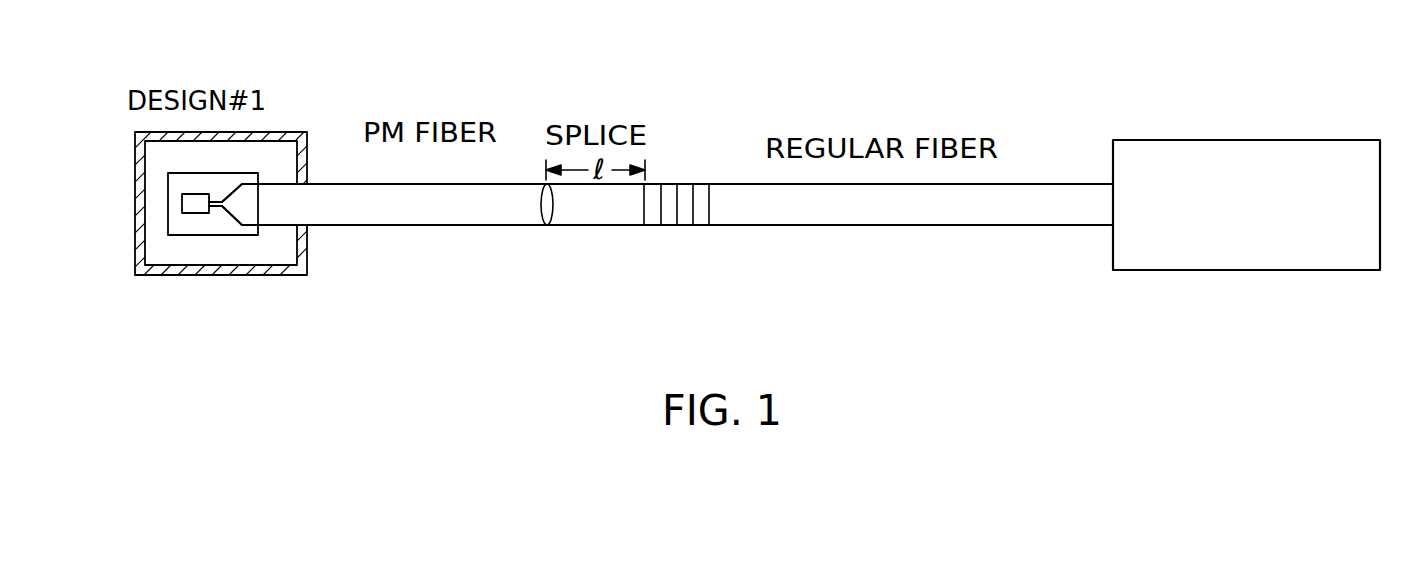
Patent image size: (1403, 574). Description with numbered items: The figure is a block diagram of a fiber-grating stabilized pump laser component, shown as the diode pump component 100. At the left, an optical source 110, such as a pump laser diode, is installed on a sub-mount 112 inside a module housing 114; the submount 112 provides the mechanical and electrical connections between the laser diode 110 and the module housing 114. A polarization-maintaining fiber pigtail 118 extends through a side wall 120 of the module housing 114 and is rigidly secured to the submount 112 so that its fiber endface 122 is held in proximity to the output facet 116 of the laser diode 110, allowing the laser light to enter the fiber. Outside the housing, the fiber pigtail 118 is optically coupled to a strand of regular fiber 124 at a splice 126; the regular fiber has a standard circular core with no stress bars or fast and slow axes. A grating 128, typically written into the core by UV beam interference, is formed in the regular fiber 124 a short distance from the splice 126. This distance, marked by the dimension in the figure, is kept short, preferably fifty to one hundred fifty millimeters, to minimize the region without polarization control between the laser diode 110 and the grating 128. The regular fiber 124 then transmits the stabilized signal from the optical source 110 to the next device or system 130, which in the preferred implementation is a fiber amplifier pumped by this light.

The diode pump component 100 is at (887, 63).
The optical source 110 is at (200, 194).
The sub-mount 112 is at (168, 203).
The module housing 114 is at (307, 245).
The output facet 116 is at (219, 201).
The fiber pigtail 118 is at (467, 226).
The side wall 120 is at (307, 162).
The fiber endface 122 is at (230, 214).
The regular fiber 124 is at (893, 226).
The splice 126 is at (547, 226).
The grating 128 is at (677, 226).
The fiber amplifier system 130 is at (1246, 140).